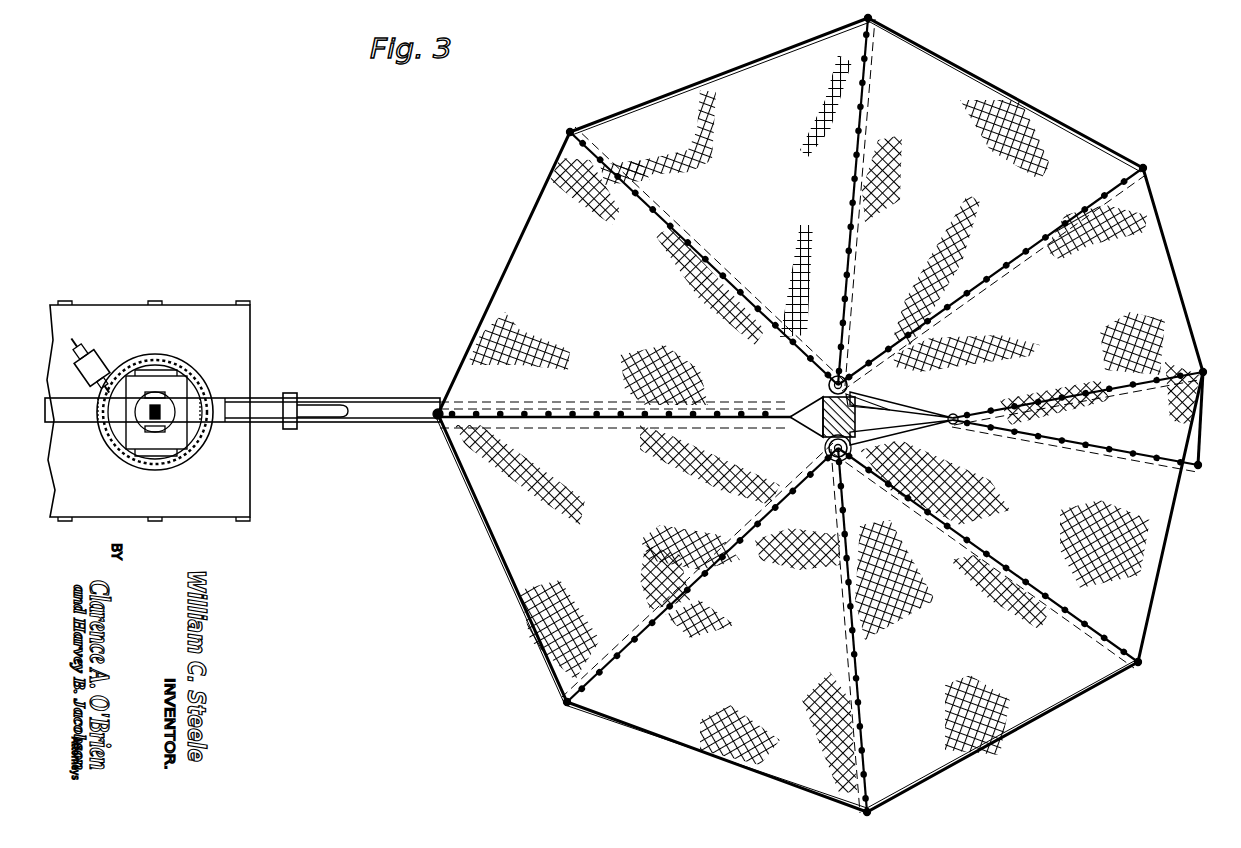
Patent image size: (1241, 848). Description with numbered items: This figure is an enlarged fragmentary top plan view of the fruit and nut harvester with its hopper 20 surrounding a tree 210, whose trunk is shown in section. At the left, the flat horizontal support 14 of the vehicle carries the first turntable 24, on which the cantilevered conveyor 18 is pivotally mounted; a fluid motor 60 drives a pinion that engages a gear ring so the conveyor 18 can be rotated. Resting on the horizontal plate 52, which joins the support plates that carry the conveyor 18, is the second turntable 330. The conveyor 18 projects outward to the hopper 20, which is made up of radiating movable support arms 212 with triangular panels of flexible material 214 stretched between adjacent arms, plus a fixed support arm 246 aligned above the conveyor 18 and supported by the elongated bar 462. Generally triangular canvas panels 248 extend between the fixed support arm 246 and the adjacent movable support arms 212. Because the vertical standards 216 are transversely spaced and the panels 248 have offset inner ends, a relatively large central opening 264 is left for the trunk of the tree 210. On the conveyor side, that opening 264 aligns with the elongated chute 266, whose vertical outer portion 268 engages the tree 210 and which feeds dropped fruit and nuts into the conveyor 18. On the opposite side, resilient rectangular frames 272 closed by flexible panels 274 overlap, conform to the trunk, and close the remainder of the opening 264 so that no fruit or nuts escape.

The flat horizontal support 14 is at (204, 318).
The fluid motor 60 is at (90, 355).
The second turntable 330 is at (178, 392).
The horizontal plate 52 is at (138, 442).
The first turntable 24 is at (191, 452).
The conveyor 18 is at (406, 396).
The elongated bar 462 is at (384, 419).
The fixed support arm 246 is at (434, 420).
The hopper 20 is at (522, 233).
The triangular panels 248 is at (492, 328).
The support arms 212 is at (876, 19).
The panels of flexible material 214 is at (717, 92).
The vertical standards 216 is at (843, 376).
The elongated chute 266 is at (808, 404).
The outer portion of the chute 268 is at (810, 428).
The central opening 264 is at (826, 450).
The tree 210 is at (872, 402).
The rectangular frames 272 is at (946, 410).
The flexible panels 274 is at (893, 434).